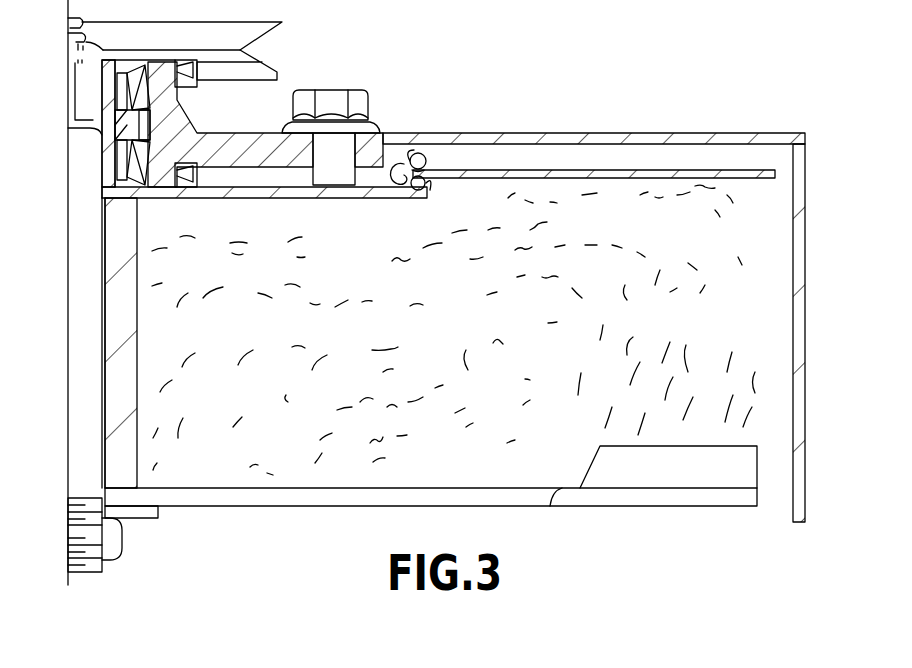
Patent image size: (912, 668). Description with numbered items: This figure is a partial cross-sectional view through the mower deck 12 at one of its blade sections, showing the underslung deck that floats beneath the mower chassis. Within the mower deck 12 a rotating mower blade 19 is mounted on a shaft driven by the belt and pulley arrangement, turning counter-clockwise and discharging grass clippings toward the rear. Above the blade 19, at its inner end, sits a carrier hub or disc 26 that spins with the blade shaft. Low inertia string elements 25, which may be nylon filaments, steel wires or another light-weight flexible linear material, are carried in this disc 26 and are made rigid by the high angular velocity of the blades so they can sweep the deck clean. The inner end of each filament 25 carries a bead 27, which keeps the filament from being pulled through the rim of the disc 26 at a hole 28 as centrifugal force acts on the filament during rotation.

The mower deck 12 is at (683, 97).
The mower blade 19 is at (617, 508).
The string elements 25 is at (551, 170).
The carrier hub 26 is at (275, 200).
The bead 27 is at (392, 165).
The hole 28 is at (421, 155).